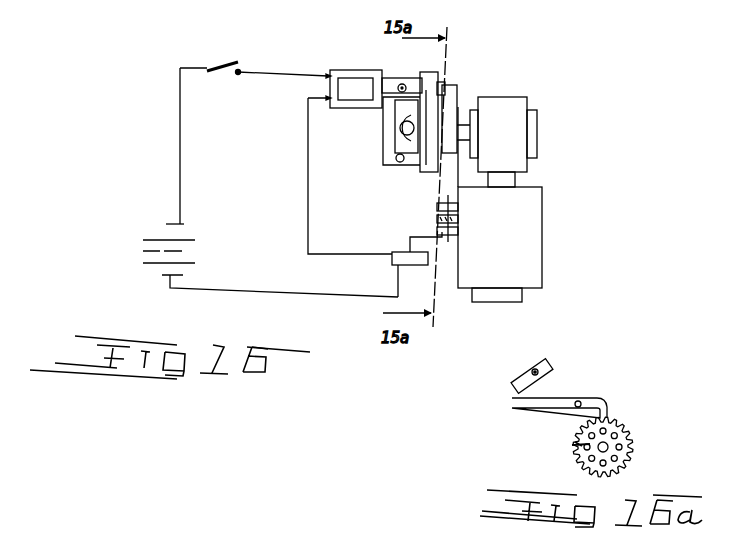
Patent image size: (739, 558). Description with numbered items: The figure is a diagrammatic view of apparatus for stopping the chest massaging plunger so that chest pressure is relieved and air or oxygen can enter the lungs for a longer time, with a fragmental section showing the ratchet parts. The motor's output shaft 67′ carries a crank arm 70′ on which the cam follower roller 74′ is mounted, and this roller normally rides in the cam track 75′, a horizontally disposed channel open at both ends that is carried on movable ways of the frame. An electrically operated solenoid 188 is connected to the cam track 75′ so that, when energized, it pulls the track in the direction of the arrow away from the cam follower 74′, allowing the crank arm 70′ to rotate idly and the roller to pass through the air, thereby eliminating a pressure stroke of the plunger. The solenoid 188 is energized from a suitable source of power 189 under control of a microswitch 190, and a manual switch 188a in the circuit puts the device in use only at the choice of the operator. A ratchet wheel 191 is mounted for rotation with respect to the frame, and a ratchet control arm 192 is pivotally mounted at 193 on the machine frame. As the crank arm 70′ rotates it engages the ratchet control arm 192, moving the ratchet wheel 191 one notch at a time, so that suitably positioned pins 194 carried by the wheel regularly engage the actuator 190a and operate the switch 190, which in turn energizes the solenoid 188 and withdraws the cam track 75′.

In FIG. 15, the manual switch 188a is at (224, 63).
In FIG. 15, the solenoid 188 is at (357, 70).
In FIG. 15, the source of power 189 is at (146, 252).
In FIG. 15, the microswitch 190 is at (392, 254).
In FIG. 15, the actuator 190a is at (437, 230).
In FIG. 15, the ratchet wheel 191 is at (460, 226).
In FIG. 15A, the ratchet wheel 191 is at (633, 440).
In FIG. 15, the ratchet control arm 192 is at (450, 183).
In FIG. 15A, the ratchet control arm 192 is at (547, 408).
In FIG. 15A, the pivot 193 is at (581, 403).
In FIG. 15, the pins 194 is at (437, 210).
In FIG. 15A, the pins 194 is at (572, 447).
In FIG. 15, the crank arm 70′ is at (455, 97).
In FIG. 15A, the crank arm 70′ is at (516, 383).
In FIG. 15, the cam follower roller 74′ is at (442, 87).
In FIG. 15, the cam track 75′ is at (430, 75).
In FIG. 15A, the output shaft 67′ is at (543, 369).